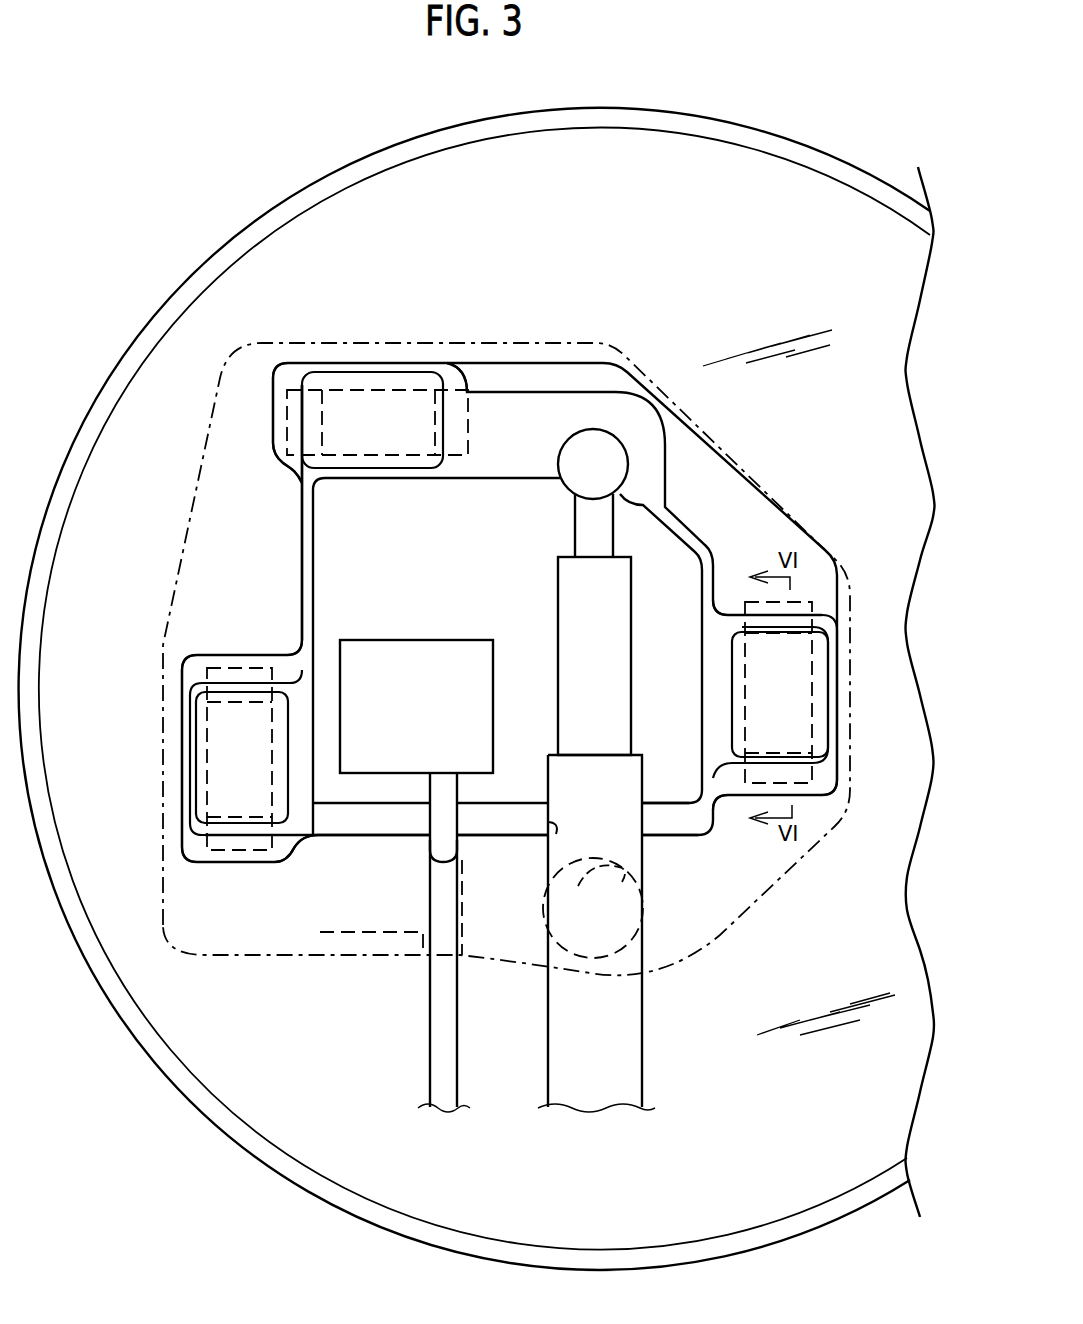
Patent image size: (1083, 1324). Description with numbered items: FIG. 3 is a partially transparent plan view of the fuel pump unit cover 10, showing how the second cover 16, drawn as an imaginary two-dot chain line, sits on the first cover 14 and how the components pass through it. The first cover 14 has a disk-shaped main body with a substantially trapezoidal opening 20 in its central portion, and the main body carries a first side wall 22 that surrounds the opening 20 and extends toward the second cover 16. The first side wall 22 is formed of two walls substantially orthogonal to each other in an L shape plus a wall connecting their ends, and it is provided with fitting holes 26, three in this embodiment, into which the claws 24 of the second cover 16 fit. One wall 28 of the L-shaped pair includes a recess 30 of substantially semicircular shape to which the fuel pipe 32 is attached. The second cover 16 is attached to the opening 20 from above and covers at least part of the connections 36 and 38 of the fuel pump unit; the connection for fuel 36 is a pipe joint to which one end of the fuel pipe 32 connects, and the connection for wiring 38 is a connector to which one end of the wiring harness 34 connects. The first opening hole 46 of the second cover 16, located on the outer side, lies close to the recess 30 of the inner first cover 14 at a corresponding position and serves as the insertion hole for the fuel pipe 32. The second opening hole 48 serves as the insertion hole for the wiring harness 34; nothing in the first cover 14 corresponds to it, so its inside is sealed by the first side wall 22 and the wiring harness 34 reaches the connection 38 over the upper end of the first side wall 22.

The vehicle sensor mounting structure 10 is at (143, 175).
The first cover 14 is at (323, 148).
The second cover 16 is at (509, 323).
The opening 20 is at (310, 575).
The first side wall 22 is at (348, 855).
The claws 24 is at (363, 381).
The fitting holes 26 is at (412, 370).
The wall 28 is at (393, 837).
The recess 30 is at (547, 835).
The fuel pipe 32 is at (640, 1050).
The wiring harness 34 is at (428, 1075).
The connection for fuel 36 is at (558, 605).
The connection for wiring 38 is at (408, 640).
The first opening hole 46 is at (623, 870).
The second opening hole 48 is at (428, 963).